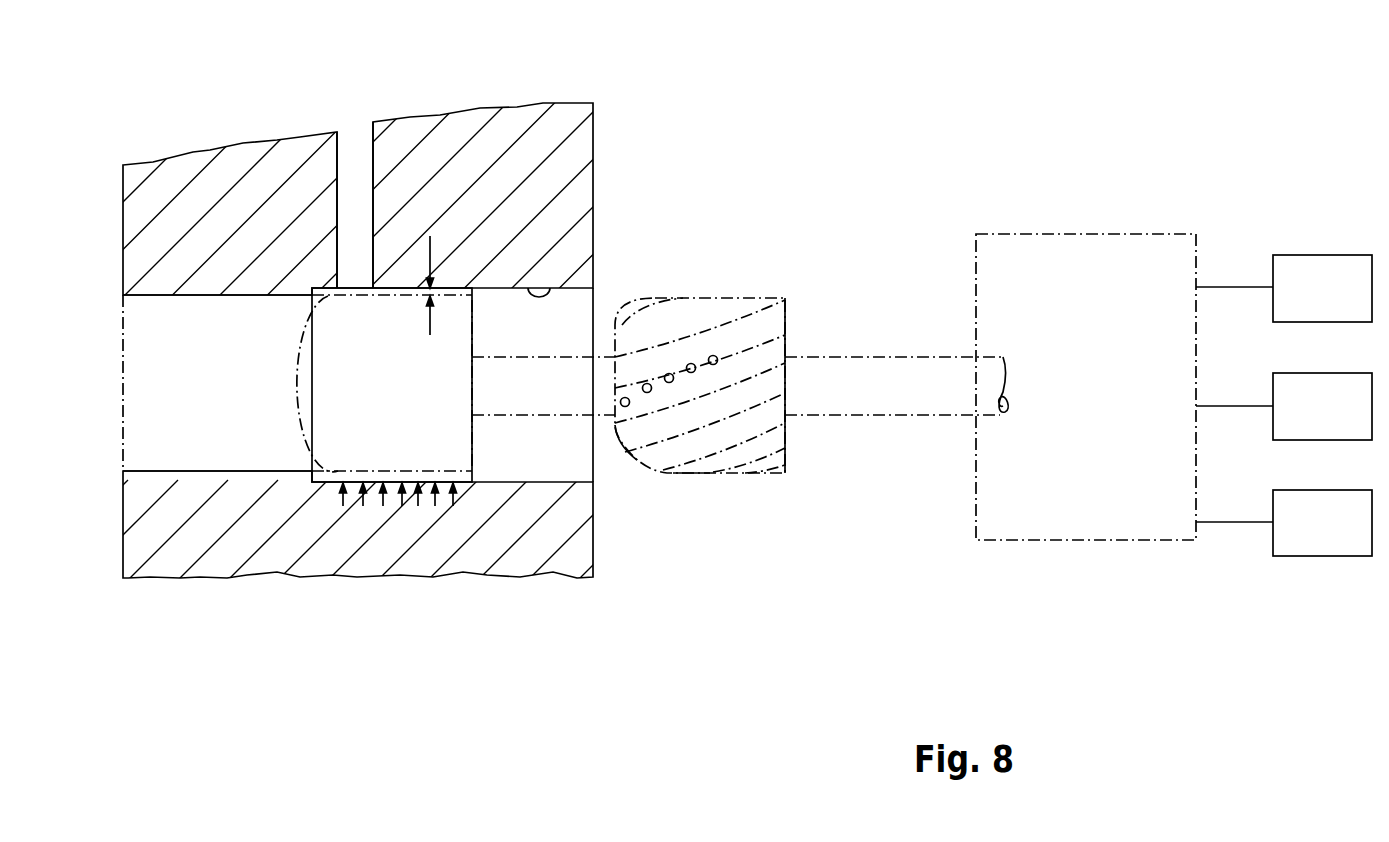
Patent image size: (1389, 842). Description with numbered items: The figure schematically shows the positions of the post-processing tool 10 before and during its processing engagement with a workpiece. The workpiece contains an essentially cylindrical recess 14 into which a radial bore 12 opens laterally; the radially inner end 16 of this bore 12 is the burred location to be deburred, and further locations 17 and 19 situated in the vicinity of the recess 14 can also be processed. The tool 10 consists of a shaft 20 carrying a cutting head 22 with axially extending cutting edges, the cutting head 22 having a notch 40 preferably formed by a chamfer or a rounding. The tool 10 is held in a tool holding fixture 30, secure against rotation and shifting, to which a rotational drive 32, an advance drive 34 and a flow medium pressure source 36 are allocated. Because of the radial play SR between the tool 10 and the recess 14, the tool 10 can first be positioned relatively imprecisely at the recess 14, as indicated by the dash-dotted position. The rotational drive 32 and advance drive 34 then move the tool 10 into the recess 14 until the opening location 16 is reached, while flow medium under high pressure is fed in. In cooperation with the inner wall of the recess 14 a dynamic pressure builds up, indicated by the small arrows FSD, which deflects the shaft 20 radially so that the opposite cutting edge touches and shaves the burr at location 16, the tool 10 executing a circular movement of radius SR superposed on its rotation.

The post-processing tool 10 is at (826, 343).
The bore 12 is at (374, 150).
The recess 14 is at (550, 287).
The radially inner end 16 is at (368, 298).
The location 17 is at (123, 295).
The location 19 is at (588, 291).
The shaft 20 is at (553, 355).
The cutting head 22 is at (708, 488).
The tool holding fixture 30 is at (1124, 250).
The rotational drive 32 is at (1308, 301).
The advance drive 34 is at (1308, 419).
The flow medium pressure source 36 is at (1308, 535).
The notch 40 is at (624, 466).
The radial play SR is at (426, 297).
The pressure force FSD is at (383, 490).